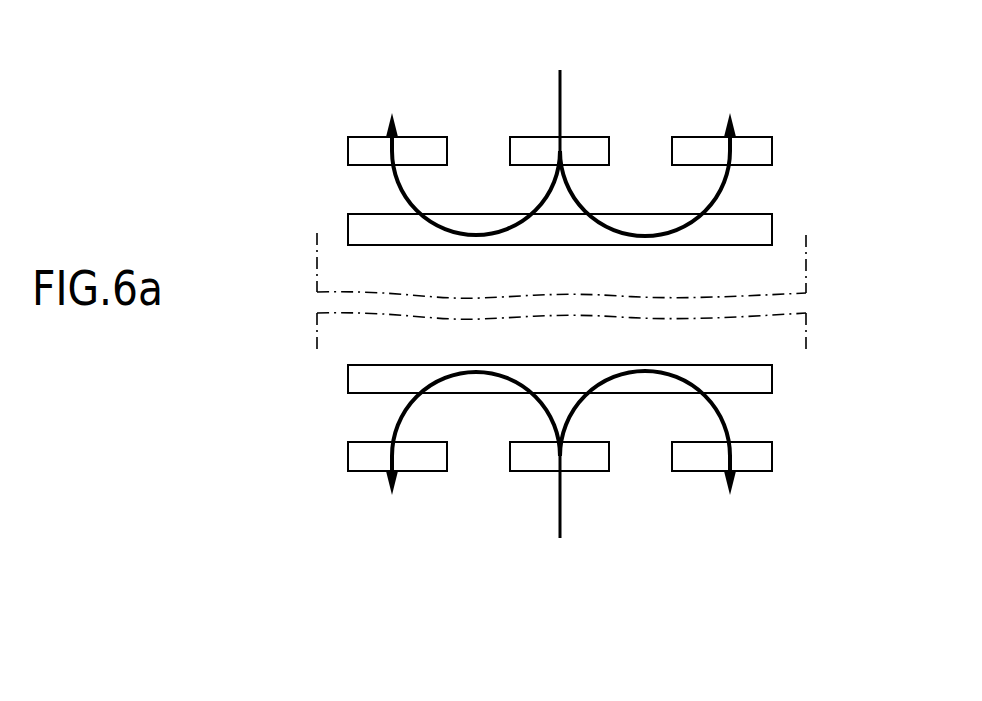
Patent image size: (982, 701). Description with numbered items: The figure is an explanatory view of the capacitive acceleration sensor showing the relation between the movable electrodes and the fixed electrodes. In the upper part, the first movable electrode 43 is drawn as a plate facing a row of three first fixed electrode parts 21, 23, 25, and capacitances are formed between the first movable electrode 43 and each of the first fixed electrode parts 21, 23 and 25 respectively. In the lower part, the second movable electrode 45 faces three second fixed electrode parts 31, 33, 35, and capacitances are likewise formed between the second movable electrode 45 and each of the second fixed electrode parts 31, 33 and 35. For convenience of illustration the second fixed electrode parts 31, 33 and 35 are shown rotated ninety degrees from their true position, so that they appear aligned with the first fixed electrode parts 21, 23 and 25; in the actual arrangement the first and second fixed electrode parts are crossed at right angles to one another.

The first fixed electrode part 21 is at (423, 145).
The first fixed electrode part 23 is at (532, 143).
The first fixed electrode part 25 is at (688, 143).
The second fixed electrode part 31 is at (430, 460).
The second fixed electrode part 33 is at (525, 458).
The second fixed electrode part 35 is at (690, 462).
The first movable electrode 43 is at (758, 230).
The second movable electrode 45 is at (763, 378).